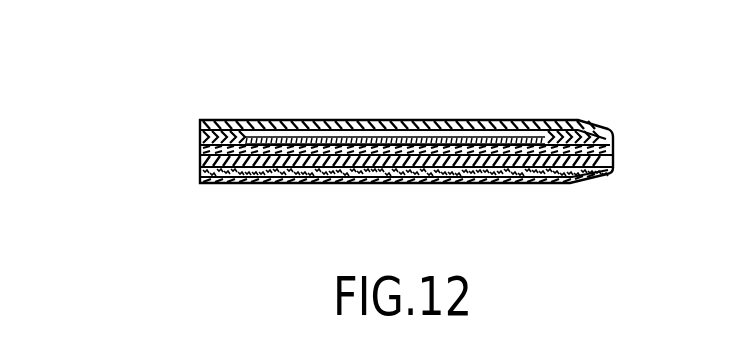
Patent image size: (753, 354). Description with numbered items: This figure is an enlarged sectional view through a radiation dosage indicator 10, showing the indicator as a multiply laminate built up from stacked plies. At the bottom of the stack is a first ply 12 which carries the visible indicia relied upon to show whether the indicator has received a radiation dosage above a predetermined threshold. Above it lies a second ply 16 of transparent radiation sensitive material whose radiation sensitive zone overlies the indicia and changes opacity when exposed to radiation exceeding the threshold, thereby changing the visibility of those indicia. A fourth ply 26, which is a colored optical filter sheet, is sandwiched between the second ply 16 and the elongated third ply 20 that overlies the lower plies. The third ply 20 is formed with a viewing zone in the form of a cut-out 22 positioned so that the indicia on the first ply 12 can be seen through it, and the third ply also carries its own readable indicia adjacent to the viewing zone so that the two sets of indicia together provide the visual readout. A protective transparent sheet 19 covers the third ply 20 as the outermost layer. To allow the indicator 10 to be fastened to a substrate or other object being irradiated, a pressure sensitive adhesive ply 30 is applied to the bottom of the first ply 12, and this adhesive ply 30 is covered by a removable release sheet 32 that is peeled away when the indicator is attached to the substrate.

The radiation dosage indicator 10 is at (465, 82).
The first ply 12 is at (200, 161).
The second ply 16 is at (200, 153).
The protective transparent sheet 19 is at (332, 120).
The third ply 20 is at (542, 122).
The cut-out 22 is at (250, 120).
The fourth ply 26 is at (200, 147).
The pressure sensitive adhesive ply 30 is at (200, 169).
The release sheet 32 is at (238, 185).